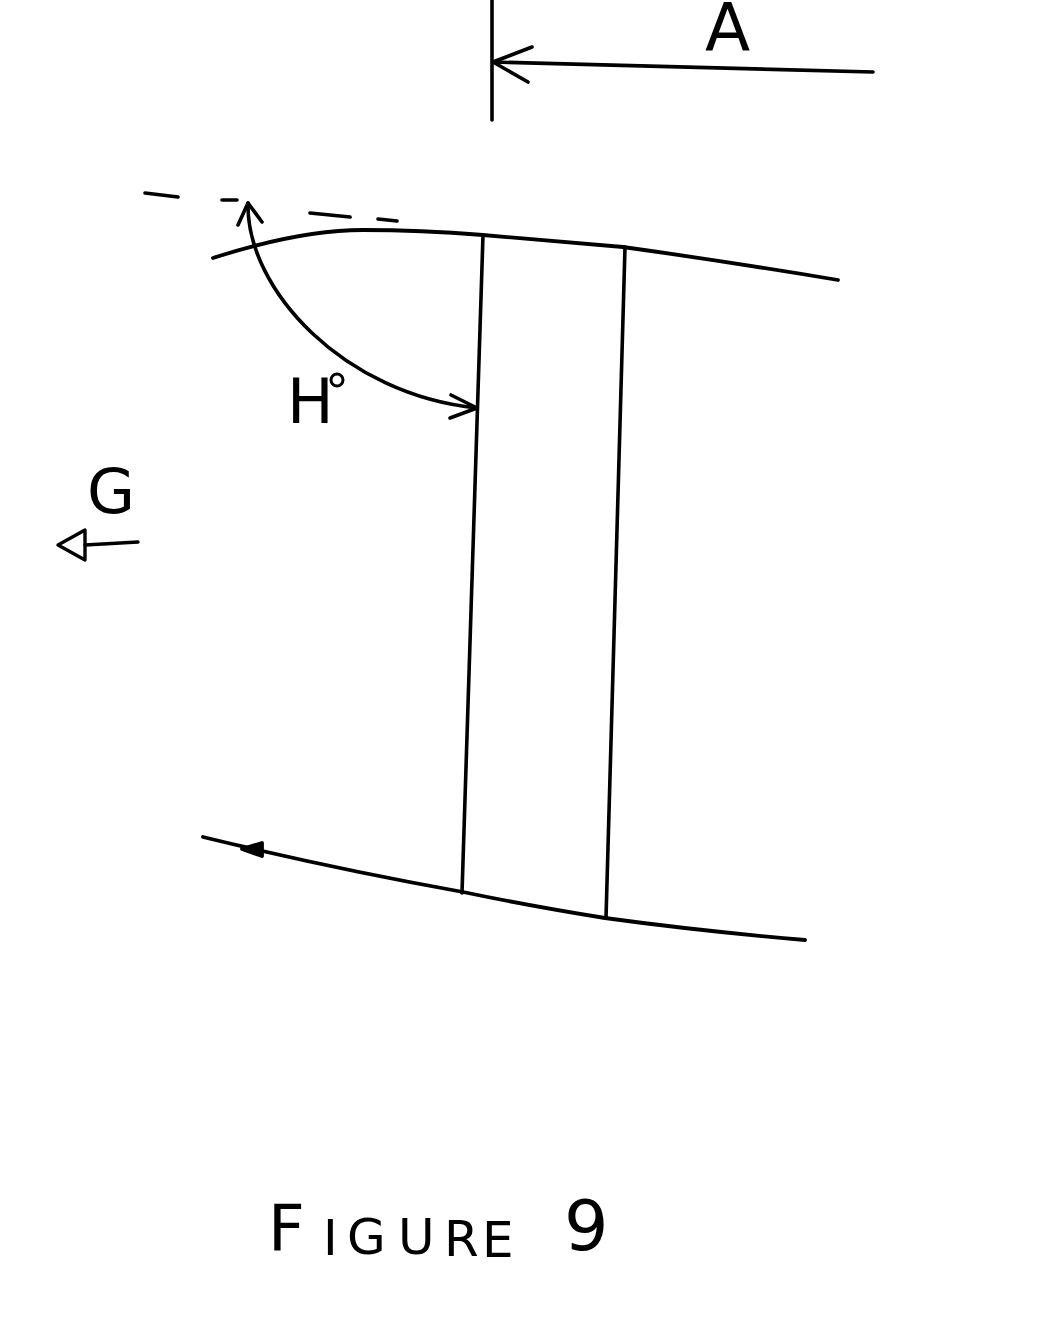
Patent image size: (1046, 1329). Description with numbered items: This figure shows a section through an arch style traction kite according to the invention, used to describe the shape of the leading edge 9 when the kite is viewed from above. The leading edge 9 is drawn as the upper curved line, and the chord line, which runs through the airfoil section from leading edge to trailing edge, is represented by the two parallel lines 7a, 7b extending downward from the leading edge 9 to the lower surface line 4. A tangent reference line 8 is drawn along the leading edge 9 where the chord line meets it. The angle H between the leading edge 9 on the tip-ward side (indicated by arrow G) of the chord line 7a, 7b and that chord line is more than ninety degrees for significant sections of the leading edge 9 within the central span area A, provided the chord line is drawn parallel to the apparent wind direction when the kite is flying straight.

The tangent datum line 8 is at (227, 200).
The leading edge 9 is at (590, 240).
The first side wall of slot 7a is at (470, 607).
The second side wall of slot 7b is at (616, 593).
The lower surface 4 is at (537, 907).